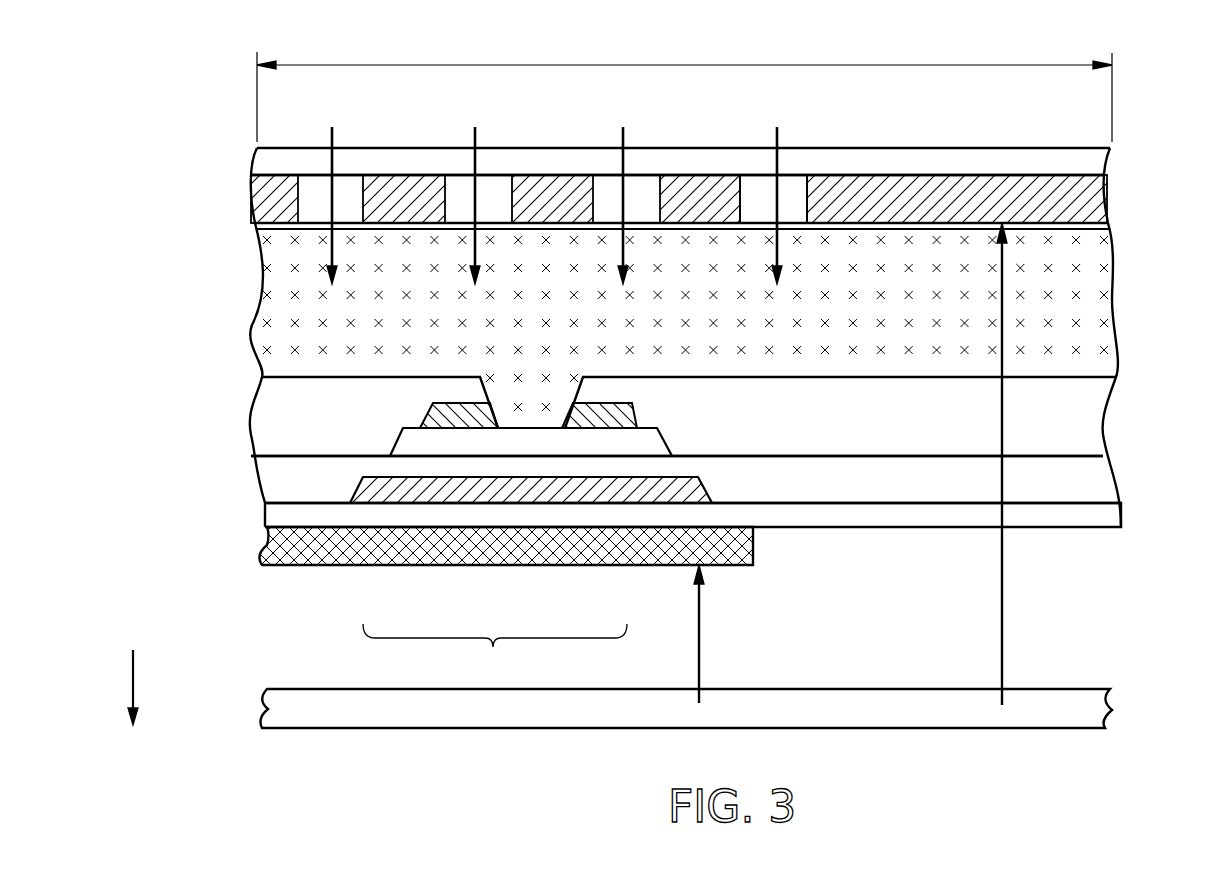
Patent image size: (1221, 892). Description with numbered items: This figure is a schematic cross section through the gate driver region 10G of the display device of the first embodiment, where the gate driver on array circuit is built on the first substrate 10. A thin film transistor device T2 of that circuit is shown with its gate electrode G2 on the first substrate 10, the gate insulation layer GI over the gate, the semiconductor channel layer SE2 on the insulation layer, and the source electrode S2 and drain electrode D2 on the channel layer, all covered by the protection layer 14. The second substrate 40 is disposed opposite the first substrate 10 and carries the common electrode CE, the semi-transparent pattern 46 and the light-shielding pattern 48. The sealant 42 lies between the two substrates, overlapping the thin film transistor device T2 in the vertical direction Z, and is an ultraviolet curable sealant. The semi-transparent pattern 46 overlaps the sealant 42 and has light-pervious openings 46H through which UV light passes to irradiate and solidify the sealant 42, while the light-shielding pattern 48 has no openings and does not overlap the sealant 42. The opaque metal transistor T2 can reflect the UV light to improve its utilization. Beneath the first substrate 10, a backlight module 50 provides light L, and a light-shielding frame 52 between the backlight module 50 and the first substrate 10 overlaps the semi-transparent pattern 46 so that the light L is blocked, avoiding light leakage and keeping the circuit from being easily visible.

The gate driver region 10G is at (684, 90).
The ultraviolet light UV is at (547, 190).
The second substrate 40 is at (1080, 160).
The light-shielding pattern 48 is at (1090, 196).
The semi-transparent pattern 46 is at (697, 185).
The light-pervious opening 46H is at (760, 190).
The common electrode CE is at (1062, 227).
The sealant 42 is at (684, 326).
The protection layer 14 is at (920, 431).
The gate insulation layer GI is at (921, 496).
The first substrate 10 is at (1085, 517).
The light-shielding frame 52 is at (740, 545).
The gate electrode G2 is at (395, 493).
The source electrode S2 is at (453, 422).
The semiconductor channel layer SE2 is at (532, 440).
The drain electrode D2 is at (603, 422).
The thin film transistor device T2 is at (495, 653).
The light L is at (700, 658).
The backlight module 50 is at (1087, 707).
The vertical direction Z is at (134, 670).